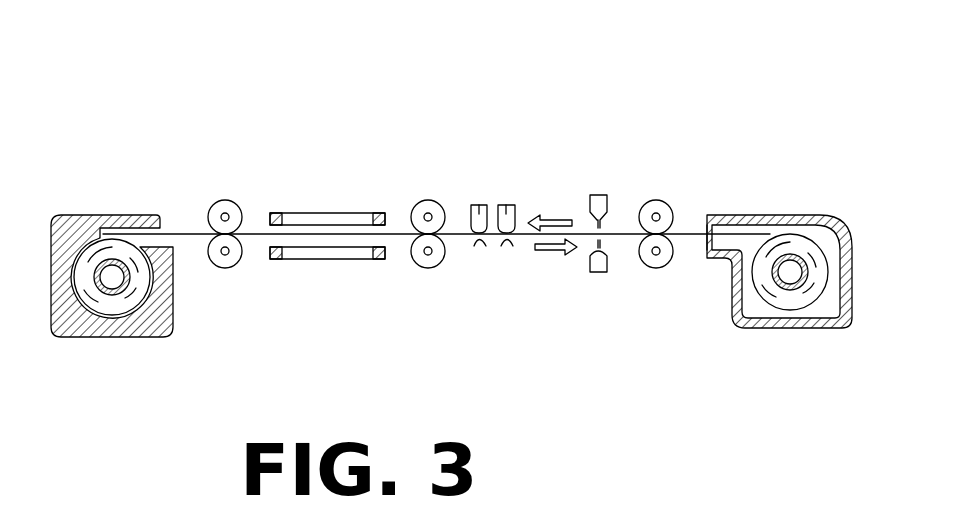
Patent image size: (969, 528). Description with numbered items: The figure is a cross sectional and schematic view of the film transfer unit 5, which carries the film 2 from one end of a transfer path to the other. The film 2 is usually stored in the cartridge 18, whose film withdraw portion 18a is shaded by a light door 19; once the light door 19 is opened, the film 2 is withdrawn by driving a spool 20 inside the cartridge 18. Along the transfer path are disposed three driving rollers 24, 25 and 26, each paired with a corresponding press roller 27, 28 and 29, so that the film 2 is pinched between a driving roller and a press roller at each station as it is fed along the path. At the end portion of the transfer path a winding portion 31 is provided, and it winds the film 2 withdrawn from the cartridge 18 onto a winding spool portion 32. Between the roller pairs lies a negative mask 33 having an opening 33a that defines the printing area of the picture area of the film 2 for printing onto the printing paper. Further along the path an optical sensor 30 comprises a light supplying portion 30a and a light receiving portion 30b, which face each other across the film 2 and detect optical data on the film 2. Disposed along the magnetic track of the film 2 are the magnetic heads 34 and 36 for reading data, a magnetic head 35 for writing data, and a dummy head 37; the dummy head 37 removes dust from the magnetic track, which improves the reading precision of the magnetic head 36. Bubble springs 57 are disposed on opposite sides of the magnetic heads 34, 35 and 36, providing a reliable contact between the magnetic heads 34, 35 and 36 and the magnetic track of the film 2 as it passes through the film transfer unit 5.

The film 2 is at (320, 236).
The film transfer unit 5 is at (605, 92).
The cartridge 18 is at (771, 252).
The film withdraw portion 18a is at (695, 219).
The light door 19 is at (735, 214).
The spool 20 is at (787, 288).
The driving roller 24 is at (225, 269).
The driving roller 25 is at (428, 269).
The driving roller 26 is at (657, 269).
The press roller 27 is at (225, 200).
The press roller 28 is at (428, 200).
The press roller 29 is at (657, 199).
The optical sensor 30 is at (620, 304).
The light supplying portion 30a is at (585, 304).
The light receiving portion 30b is at (604, 213).
The winding portion 31 is at (112, 266).
The winding spool portion 32 is at (118, 292).
The negative mask 33 is at (328, 181).
The opening 33a is at (298, 212).
The magnetic head 34 is at (463, 148).
The magnetic head 35 is at (535, 159).
The magnetic head 36 is at (477, 205).
The dummy head 37 is at (508, 205).
The bubble springs 57 is at (507, 242).